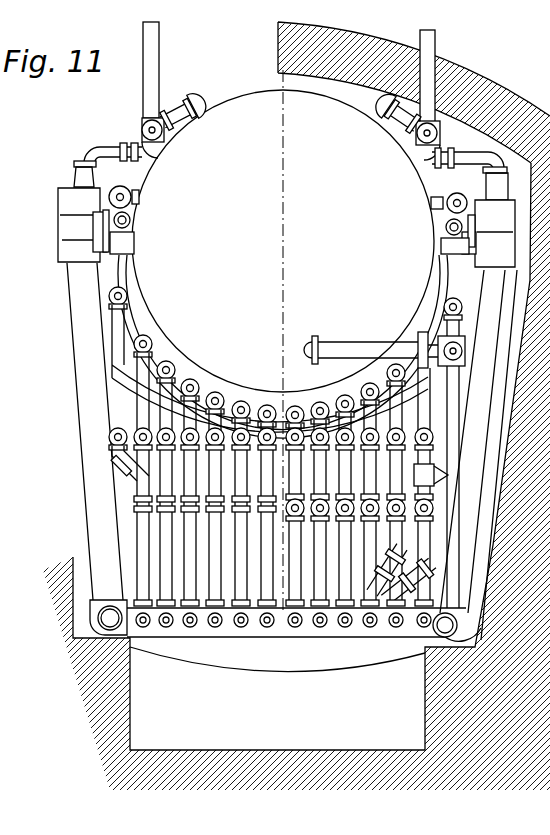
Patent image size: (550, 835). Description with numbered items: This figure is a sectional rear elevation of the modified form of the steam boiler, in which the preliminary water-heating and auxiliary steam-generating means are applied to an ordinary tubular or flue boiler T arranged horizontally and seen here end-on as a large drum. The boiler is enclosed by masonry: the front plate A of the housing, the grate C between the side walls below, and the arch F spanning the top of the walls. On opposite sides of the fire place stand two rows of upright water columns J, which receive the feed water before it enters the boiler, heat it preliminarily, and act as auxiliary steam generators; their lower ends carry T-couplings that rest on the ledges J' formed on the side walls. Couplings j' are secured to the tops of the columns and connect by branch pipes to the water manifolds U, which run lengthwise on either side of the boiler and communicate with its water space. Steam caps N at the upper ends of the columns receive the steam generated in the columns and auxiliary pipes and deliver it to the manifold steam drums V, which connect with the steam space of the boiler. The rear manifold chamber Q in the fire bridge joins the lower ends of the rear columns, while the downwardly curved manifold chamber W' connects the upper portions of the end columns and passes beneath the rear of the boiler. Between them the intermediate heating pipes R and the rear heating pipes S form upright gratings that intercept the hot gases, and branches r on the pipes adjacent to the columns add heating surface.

The arch F is at (437, 50).
The front plate A is at (527, 376).
The tubular or flue boiler T is at (283, 341).
The grate C is at (260, 660).
The water columns J is at (282, 451).
The ledges J' is at (273, 661).
The rear manifold chamber Q is at (357, 630).
The intermediate heating pipes R is at (278, 346).
The rear heating pipes S is at (362, 466).
The branches r is at (120, 459).
The rear manifold chamber W' is at (384, 451).
The manifold steam drums V is at (143, 125).
The steam caps N is at (55, 200).
The couplings j' is at (259, 227).
The water manifolds U is at (289, 208).